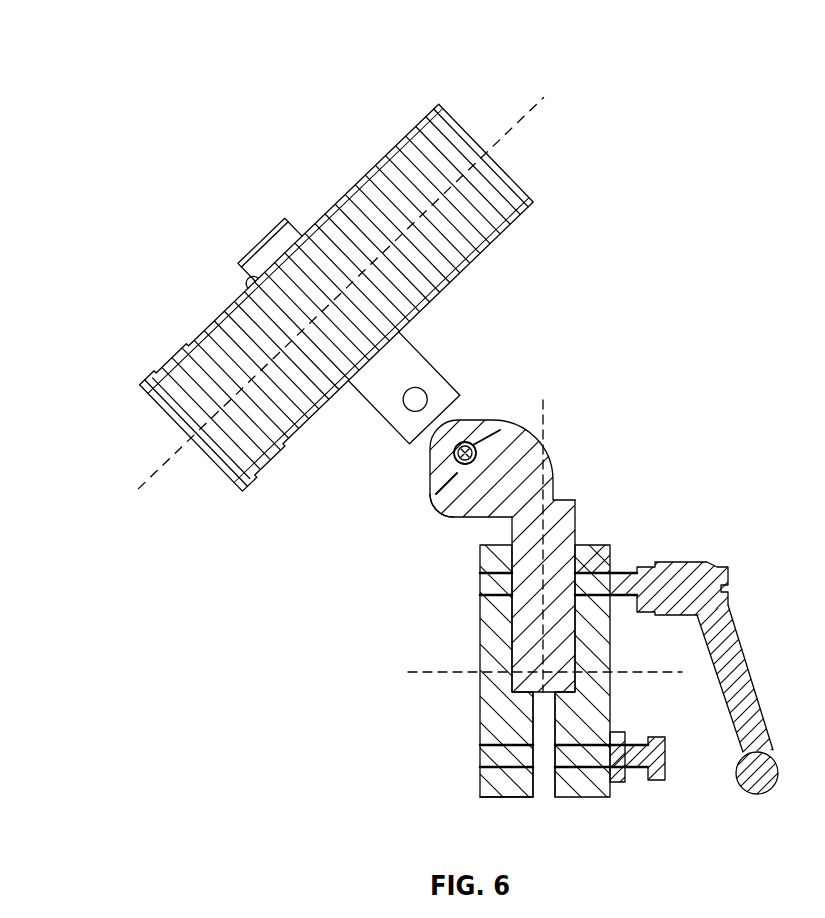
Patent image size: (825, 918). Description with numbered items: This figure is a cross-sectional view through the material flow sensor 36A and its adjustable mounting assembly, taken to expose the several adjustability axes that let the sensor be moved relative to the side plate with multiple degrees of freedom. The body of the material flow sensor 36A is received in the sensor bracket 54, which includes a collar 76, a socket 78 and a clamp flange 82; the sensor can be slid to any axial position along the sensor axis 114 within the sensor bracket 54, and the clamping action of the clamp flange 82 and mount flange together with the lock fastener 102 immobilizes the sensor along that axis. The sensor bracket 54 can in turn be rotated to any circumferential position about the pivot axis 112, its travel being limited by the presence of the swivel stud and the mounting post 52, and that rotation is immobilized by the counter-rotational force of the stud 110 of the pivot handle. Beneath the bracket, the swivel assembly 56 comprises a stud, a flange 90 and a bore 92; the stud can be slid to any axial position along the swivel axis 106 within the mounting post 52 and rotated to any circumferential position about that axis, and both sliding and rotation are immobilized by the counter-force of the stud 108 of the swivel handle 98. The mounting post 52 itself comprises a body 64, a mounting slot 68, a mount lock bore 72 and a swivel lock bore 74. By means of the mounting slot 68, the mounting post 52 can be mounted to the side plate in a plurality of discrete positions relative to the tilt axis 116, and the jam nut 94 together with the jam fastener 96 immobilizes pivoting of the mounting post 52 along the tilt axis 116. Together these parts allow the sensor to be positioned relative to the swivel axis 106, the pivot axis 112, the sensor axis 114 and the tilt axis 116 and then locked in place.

The material flow sensor 36A is at (338, 301).
The sensor axis 114 is at (510, 130).
The sensor bracket 54 is at (219, 242).
The collar 76 is at (267, 247).
The socket 78 is at (240, 297).
The clamp flange 82 is at (401, 390).
The lock fastener 102 is at (412, 410).
The flange 90 is at (490, 539).
The bore 92 is at (467, 441).
The pivot axis 112 is at (433, 481).
The stud 110 is at (436, 506).
The swivel assembly 56 is at (490, 539).
The swivel axis 106 is at (548, 420).
The swivel lock bore 74 is at (588, 560).
The stud 108 is at (618, 600).
The swivel handle 98 is at (743, 672).
The tilt axis 116 is at (430, 673).
The body 64 is at (492, 718).
The mounting post 52 is at (522, 672).
The mounting slot 68 is at (511, 790).
The mount lock bore 72 is at (545, 797).
The jam fastener 96 is at (601, 798).
The jam nut 94 is at (638, 766).